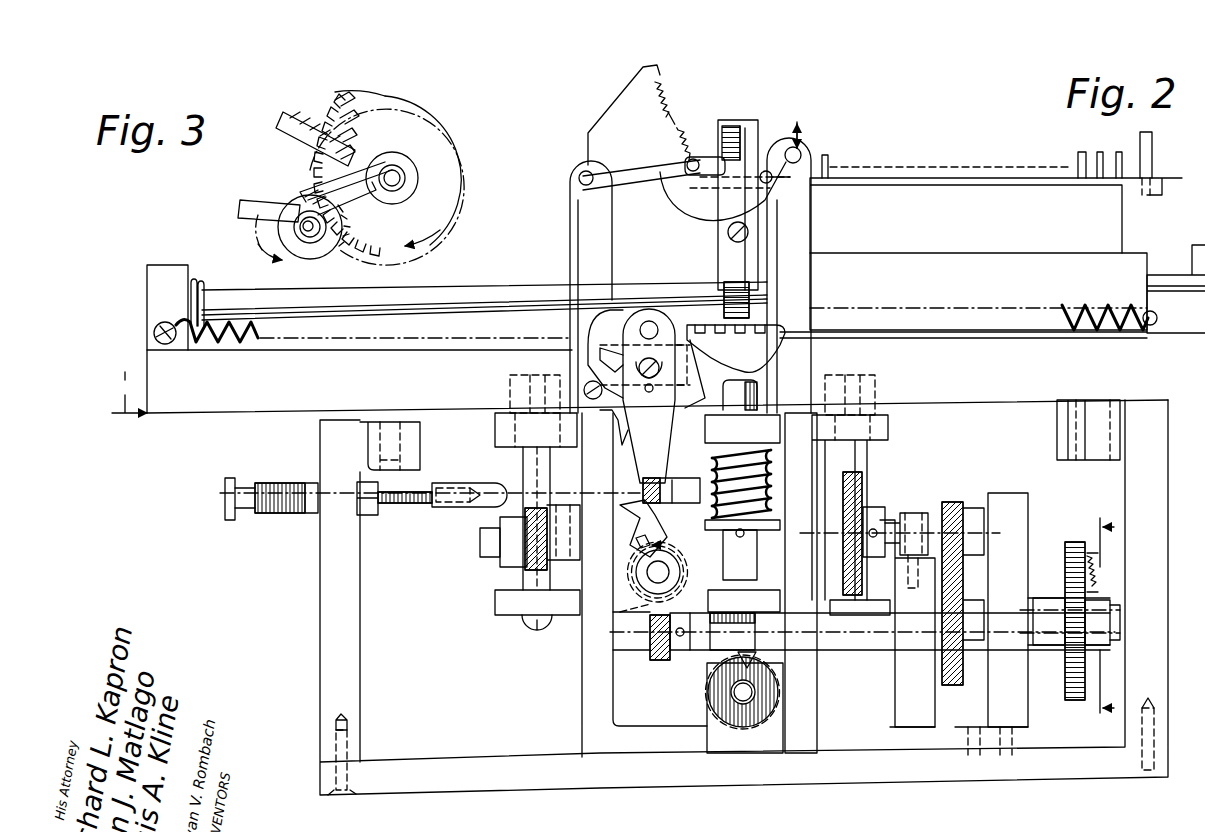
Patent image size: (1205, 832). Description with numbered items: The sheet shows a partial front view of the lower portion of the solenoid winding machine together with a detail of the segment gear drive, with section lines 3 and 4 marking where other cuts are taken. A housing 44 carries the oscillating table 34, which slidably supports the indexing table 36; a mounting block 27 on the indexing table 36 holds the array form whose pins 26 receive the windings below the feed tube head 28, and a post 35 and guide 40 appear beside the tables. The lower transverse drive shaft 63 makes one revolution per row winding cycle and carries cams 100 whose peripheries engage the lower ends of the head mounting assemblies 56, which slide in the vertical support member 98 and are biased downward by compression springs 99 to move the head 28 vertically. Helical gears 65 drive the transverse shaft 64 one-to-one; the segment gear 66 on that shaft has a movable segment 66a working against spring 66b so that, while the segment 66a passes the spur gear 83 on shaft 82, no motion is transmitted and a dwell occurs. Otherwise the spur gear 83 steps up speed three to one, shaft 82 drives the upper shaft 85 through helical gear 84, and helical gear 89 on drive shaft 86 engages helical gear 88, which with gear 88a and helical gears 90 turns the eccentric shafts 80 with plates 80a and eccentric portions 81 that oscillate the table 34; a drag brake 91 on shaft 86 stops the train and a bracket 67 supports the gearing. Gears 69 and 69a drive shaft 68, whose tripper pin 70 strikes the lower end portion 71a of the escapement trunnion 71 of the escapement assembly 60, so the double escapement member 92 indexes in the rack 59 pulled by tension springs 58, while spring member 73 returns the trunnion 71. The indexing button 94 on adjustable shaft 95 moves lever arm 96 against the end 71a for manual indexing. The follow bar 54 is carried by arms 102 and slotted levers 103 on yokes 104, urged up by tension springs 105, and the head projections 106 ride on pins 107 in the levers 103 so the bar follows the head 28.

In FIG. 2, the section line 3- 3 is at (1106, 616).
In FIG. 2, the section line 4- 4 is at (129, 387).
In FIG. 2, the pins 26 is at (830, 158).
In FIG. 2, the mounting block 27 is at (996, 215).
In FIG. 2, the feed tube head 28 is at (750, 113).
In FIG. 2, the oscillating table 34 is at (657, 339).
In FIG. 2, the stop post 35 is at (1153, 145).
In FIG. 2, the indexing table 36 is at (703, 295).
In FIG. 2, the guide rail 40 is at (243, 300).
In FIG. 2, the housing 44 is at (1160, 615).
In FIG. 2, the follow bar 54 is at (710, 160).
In FIG. 2, the head mounting assemblies 56 is at (722, 238).
In FIG. 2, the tension springs 58 is at (225, 340).
In FIG. 2, the rack 59 is at (690, 343).
In FIG. 2, the escapement assembly 60 is at (668, 300).
In FIG. 2, the lower transverse drive shaft 63 is at (745, 712).
In FIG. 3, the transverse shaft 64 is at (318, 110).
In FIG. 2, the transverse shaft 64 is at (703, 652).
In FIG. 2, the helical gears 65 is at (760, 648).
In FIG. 3, the segment gear 66 is at (380, 232).
In FIG. 2, the segment gear 66 is at (1062, 552).
In FIG. 3, the movable segment 66a is at (325, 188).
In FIG. 3, the spring 66b is at (365, 148).
In FIG. 2, the spring 66b is at (1106, 572).
In FIG. 2, the bracket 67 is at (1025, 492).
In FIG. 2, the shaft 68 is at (650, 580).
In FIG. 2, the gear 69 is at (655, 660).
In FIG. 2, the gear 69a is at (617, 612).
In FIG. 2, the tripper pin 70 is at (636, 544).
In FIG. 2, the escapement trunnion 71 is at (639, 396).
In FIG. 2, the lower end portion 71a is at (660, 516).
In FIG. 2, the spring member 73 is at (620, 440).
In FIG. 2, the eccentric shafts 80 is at (520, 455).
In FIG. 2, the plates 80a is at (478, 432).
In FIG. 2, the eccentric shaft portions 81 is at (515, 375).
In FIG. 3, the shaft 82 is at (252, 218).
In FIG. 2, the shaft 82 is at (860, 640).
In FIG. 3, the spur gear 83 is at (320, 247).
In FIG. 2, the spur gear 83 is at (1070, 630).
In FIG. 2, the helical gear 84 is at (965, 668).
In FIG. 2, the upper shaft 85 is at (950, 500).
In FIG. 2, the drive shaft 86 is at (478, 535).
In FIG. 2, the helical gear 88 is at (835, 555).
In FIG. 2, the gear 88a is at (525, 572).
In FIG. 2, the helical gear 89 is at (870, 480).
In FIG. 2, the helical gears 90 is at (520, 540).
In FIG. 2, the drag brake 91 is at (925, 500).
In FIG. 2, the double escapement member 92 is at (698, 402).
In FIG. 2, the indexing button 94 is at (240, 512).
In FIG. 2, the adjustable shaft 95 is at (450, 512).
In FIG. 2, the lever arm 96 is at (698, 480).
In FIG. 2, the vertical support member 98 is at (818, 700).
In FIG. 2, the compression springs 99 is at (710, 452).
In FIG. 2, the cams 100 is at (715, 710).
In FIG. 2, the arms 102 is at (640, 180).
In FIG. 2, the levers 103 is at (700, 200).
In FIG. 2, the yokes 104 is at (565, 195).
In FIG. 2, the tension springs 105 is at (665, 93).
In FIG. 2, the lateral head projections 106 is at (770, 160).
In FIG. 2, the pins 107 is at (795, 160).